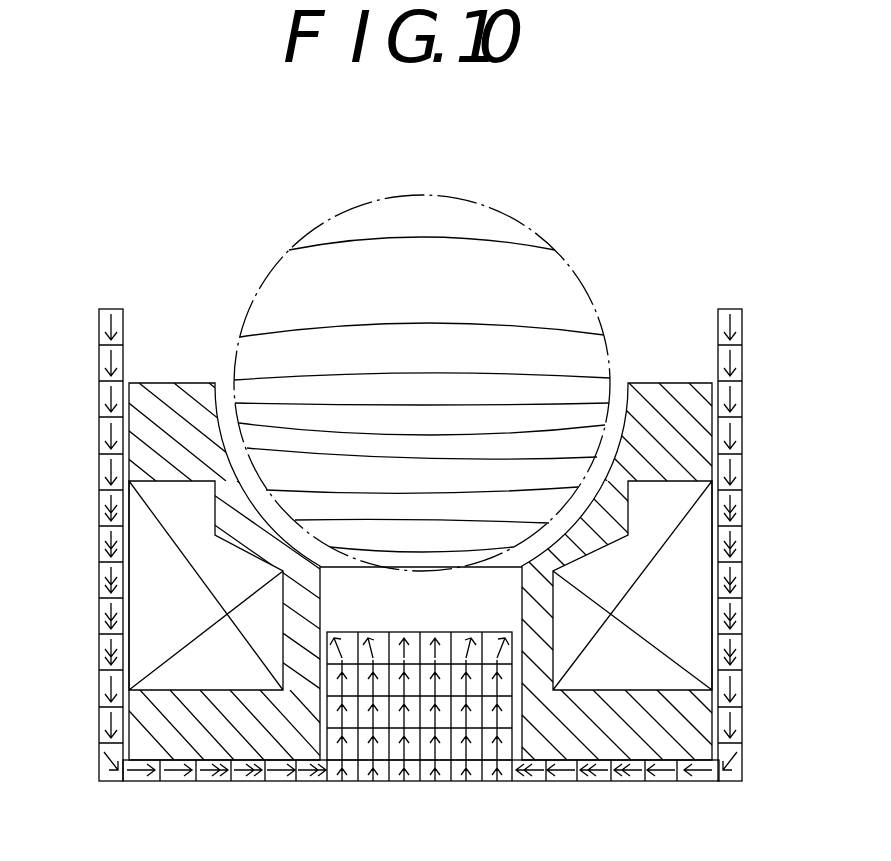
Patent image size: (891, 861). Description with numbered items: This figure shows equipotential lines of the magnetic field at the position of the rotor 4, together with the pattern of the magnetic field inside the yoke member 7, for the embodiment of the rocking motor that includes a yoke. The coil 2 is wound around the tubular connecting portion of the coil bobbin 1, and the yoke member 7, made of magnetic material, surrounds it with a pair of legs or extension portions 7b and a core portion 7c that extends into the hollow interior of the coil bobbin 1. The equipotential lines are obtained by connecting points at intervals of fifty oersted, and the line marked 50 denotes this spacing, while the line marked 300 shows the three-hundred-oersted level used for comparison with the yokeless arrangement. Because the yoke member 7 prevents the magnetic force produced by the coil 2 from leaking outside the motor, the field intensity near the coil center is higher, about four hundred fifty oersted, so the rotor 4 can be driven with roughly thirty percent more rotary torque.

The coil bobbin 1 is at (630, 743).
The coil 2 is at (677, 630).
The rotor 4 is at (470, 353).
The yoke member 7 is at (763, 757).
The extension portions 7b is at (105, 461).
The core portion 7c is at (443, 748).
The magnetic field 50 Oe 50 is at (323, 248).
The magnetic field 300 Oe 300 is at (530, 458).